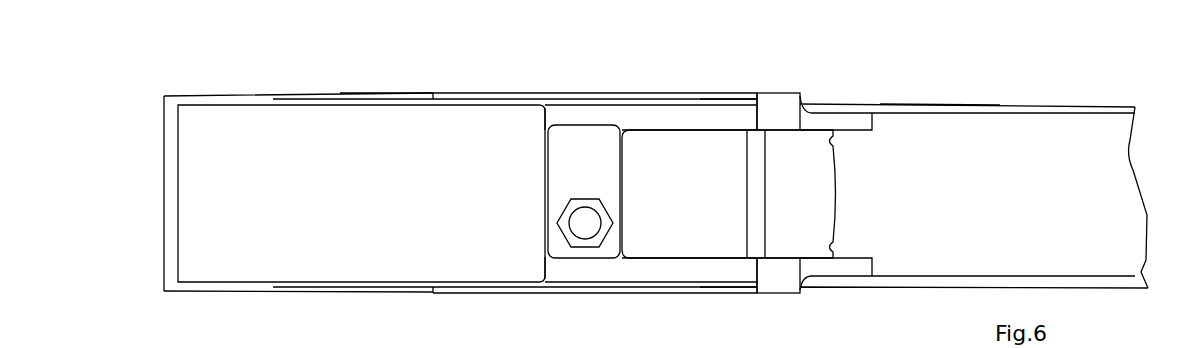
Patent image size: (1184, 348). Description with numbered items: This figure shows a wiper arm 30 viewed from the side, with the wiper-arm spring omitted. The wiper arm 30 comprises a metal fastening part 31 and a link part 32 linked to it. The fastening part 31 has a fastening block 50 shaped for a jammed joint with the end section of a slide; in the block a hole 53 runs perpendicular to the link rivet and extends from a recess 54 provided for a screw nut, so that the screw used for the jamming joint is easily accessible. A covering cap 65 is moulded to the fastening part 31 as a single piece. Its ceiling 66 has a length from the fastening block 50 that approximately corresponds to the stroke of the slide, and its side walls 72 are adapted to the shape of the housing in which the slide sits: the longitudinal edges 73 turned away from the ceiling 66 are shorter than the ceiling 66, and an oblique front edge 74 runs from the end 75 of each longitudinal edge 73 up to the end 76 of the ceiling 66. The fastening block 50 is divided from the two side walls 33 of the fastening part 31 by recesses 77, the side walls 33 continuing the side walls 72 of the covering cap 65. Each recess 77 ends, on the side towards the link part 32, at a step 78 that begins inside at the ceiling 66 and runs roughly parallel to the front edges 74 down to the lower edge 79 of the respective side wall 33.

The wiper arm 30 is at (918, 94).
The fastening part 31 is at (826, 198).
The link part 32 is at (1013, 106).
The side walls of the fastening part 33 is at (732, 93).
The fastening block 50 is at (555, 170).
The hole 53 is at (572, 224).
The recess for a screw nut 54 is at (594, 243).
The covering cap 65 is at (377, 93).
The ceiling 66 is at (356, 224).
The side walls of the covering cap 72 is at (414, 93).
The longitudinal edges 73 is at (496, 96).
The front edge 74 is at (253, 95).
The end of the longitudinal edges 75 is at (434, 95).
The end of the ceiling 76 is at (163, 137).
The recesses 77 is at (538, 118).
The step 78 is at (670, 117).
The lower edge 79 is at (788, 105).